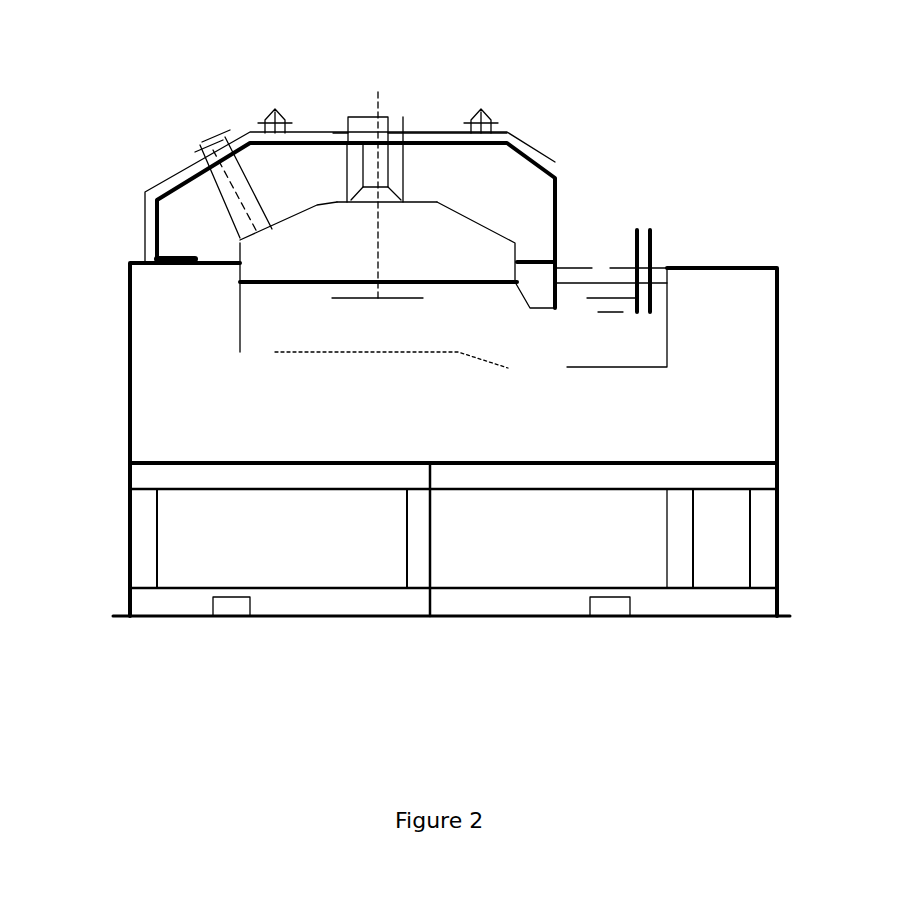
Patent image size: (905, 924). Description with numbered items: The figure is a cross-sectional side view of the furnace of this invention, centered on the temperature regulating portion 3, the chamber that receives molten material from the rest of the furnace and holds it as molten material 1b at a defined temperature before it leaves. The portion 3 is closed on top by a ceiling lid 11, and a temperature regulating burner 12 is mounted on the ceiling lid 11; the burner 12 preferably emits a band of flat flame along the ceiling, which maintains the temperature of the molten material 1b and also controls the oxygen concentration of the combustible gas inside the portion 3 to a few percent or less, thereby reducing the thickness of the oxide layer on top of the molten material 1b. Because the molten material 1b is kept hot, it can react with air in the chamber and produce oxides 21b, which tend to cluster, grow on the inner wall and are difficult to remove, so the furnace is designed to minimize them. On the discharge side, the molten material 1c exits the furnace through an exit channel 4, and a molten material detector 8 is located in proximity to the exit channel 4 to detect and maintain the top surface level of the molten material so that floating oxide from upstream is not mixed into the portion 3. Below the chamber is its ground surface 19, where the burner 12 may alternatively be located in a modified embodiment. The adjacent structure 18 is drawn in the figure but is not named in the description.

The temperature regulating portion 3 is at (345, 238).
The ceiling lid 11 is at (183, 223).
The temperature regulating burner 12 is at (390, 130).
The molten material 1b is at (460, 283).
The oxides 21b is at (315, 290).
The molten material 1c is at (598, 290).
The molten material detector 8 is at (652, 228).
The left chamber 18 is at (165, 320).
The exit channel 4 is at (605, 337).
The ground surface 19 is at (405, 420).